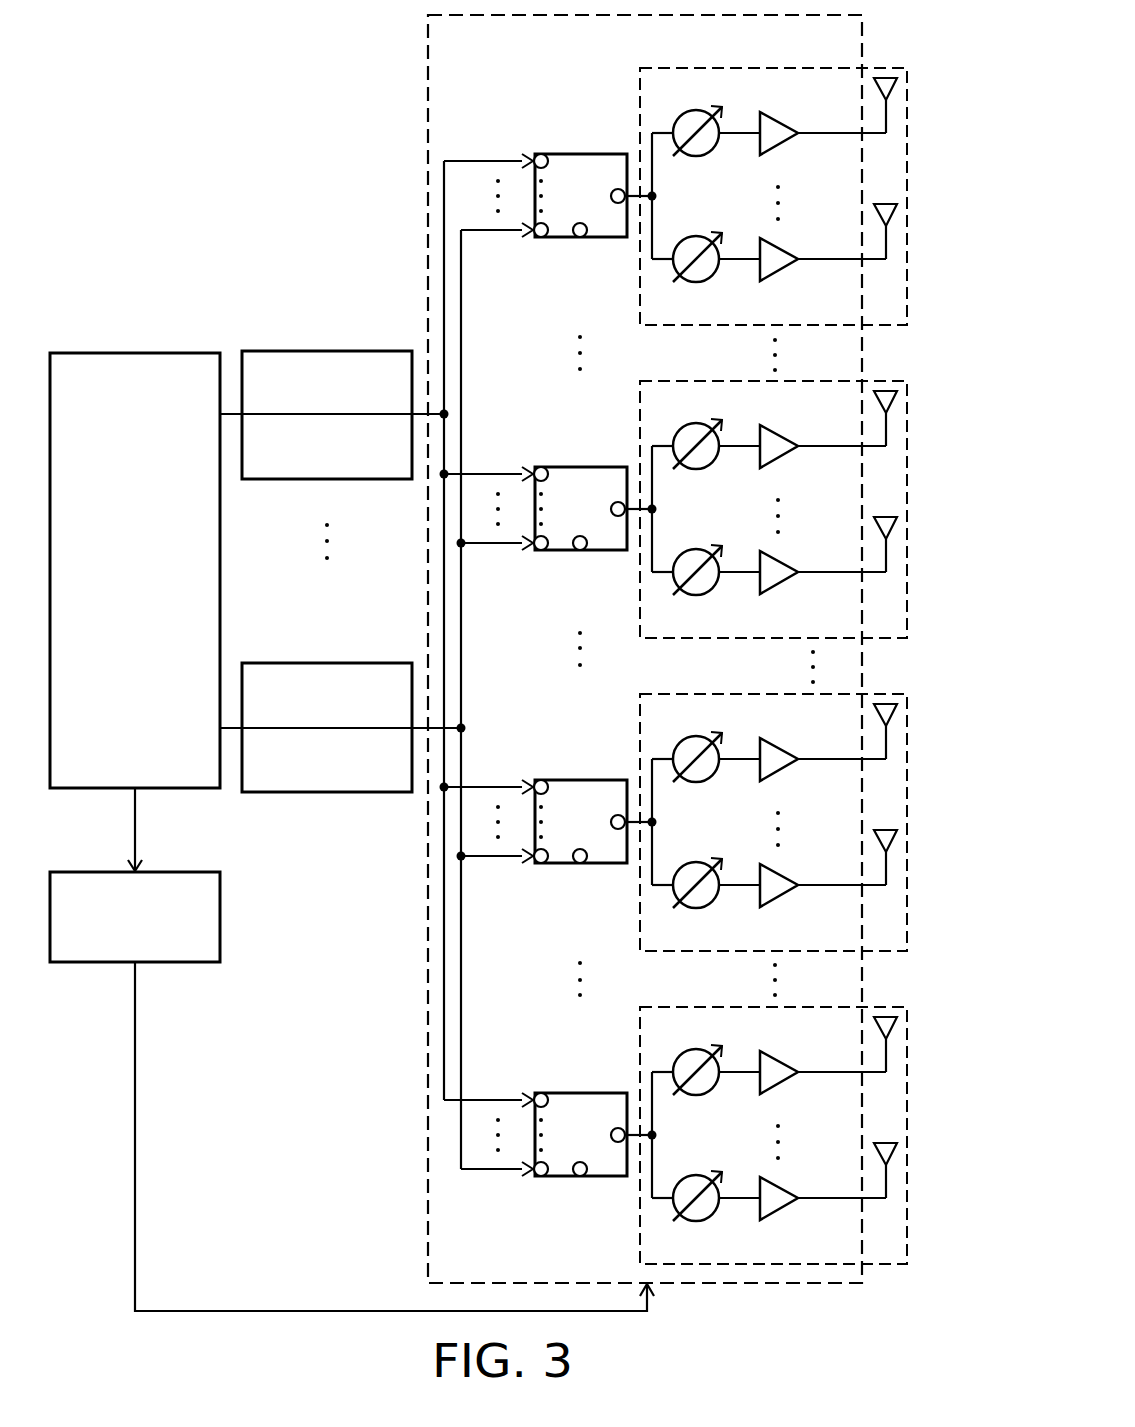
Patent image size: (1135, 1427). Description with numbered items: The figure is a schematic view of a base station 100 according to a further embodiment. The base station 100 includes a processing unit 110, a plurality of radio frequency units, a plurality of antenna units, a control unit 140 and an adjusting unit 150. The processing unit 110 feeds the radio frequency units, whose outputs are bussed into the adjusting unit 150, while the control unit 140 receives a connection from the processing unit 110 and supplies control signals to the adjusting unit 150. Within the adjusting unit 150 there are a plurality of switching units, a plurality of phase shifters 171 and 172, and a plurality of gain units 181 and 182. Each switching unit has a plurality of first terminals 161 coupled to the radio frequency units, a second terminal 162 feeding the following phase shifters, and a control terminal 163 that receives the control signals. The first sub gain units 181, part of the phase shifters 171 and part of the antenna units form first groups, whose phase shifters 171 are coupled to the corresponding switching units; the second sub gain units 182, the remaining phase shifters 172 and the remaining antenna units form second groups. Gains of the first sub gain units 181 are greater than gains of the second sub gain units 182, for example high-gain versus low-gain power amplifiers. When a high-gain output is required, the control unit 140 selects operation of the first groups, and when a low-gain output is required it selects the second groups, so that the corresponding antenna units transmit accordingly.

The base station 100 is at (100, 52).
The processing unit 110 is at (135, 352).
The control unit 140 is at (220, 915).
The adjusting unit 150 is at (427, 47).
The first terminal 161 is at (541, 154).
The second terminal 162 is at (617, 204).
The control terminal 163 is at (580, 238).
The phase shifter 171 is at (697, 157).
The phase shifter 172 is at (697, 783).
The first sub gain unit 181 is at (782, 148).
The second sub gain unit 182 is at (782, 774).